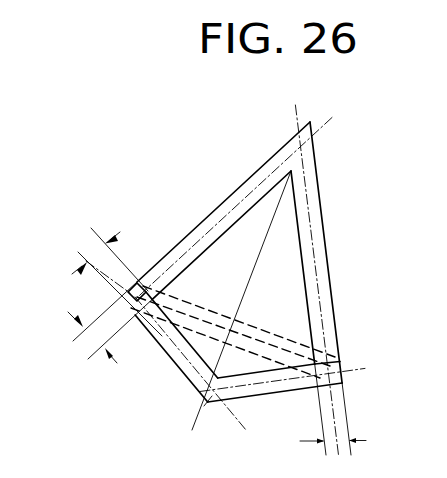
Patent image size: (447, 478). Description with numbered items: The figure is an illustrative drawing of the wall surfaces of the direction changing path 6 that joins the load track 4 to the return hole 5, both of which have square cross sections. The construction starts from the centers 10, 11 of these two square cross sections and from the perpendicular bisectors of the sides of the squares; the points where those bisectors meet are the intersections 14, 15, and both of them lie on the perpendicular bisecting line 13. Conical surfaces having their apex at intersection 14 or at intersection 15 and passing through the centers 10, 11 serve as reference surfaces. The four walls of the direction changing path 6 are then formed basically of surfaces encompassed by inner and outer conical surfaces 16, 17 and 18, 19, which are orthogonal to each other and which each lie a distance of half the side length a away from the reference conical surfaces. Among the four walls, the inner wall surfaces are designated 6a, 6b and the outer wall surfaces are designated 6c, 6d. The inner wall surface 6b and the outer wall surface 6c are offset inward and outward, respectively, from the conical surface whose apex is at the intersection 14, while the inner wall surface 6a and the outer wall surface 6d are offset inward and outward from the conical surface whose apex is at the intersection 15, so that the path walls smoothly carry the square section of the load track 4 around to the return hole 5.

The load track 4 is at (135, 304).
The return hole 5 is at (340, 362).
The direction changing path 6 is at (278, 336).
The inner wall surface 6a is at (141, 280).
The inner wall surface 6b is at (198, 392).
The outer wall surface 6c is at (134, 306).
The outer wall surface 6d is at (128, 291).
The center 10 is at (140, 306).
The center 11 is at (341, 384).
The perpendicular bisecting line 13 is at (327, 108).
The intersection 14 is at (302, 146).
The intersection 15 is at (205, 401).
The inner conical surface 16 is at (244, 214).
The outer conical surface 17 is at (252, 176).
The inner conical surface 18 is at (263, 375).
The outer conical surface 19 is at (319, 289).